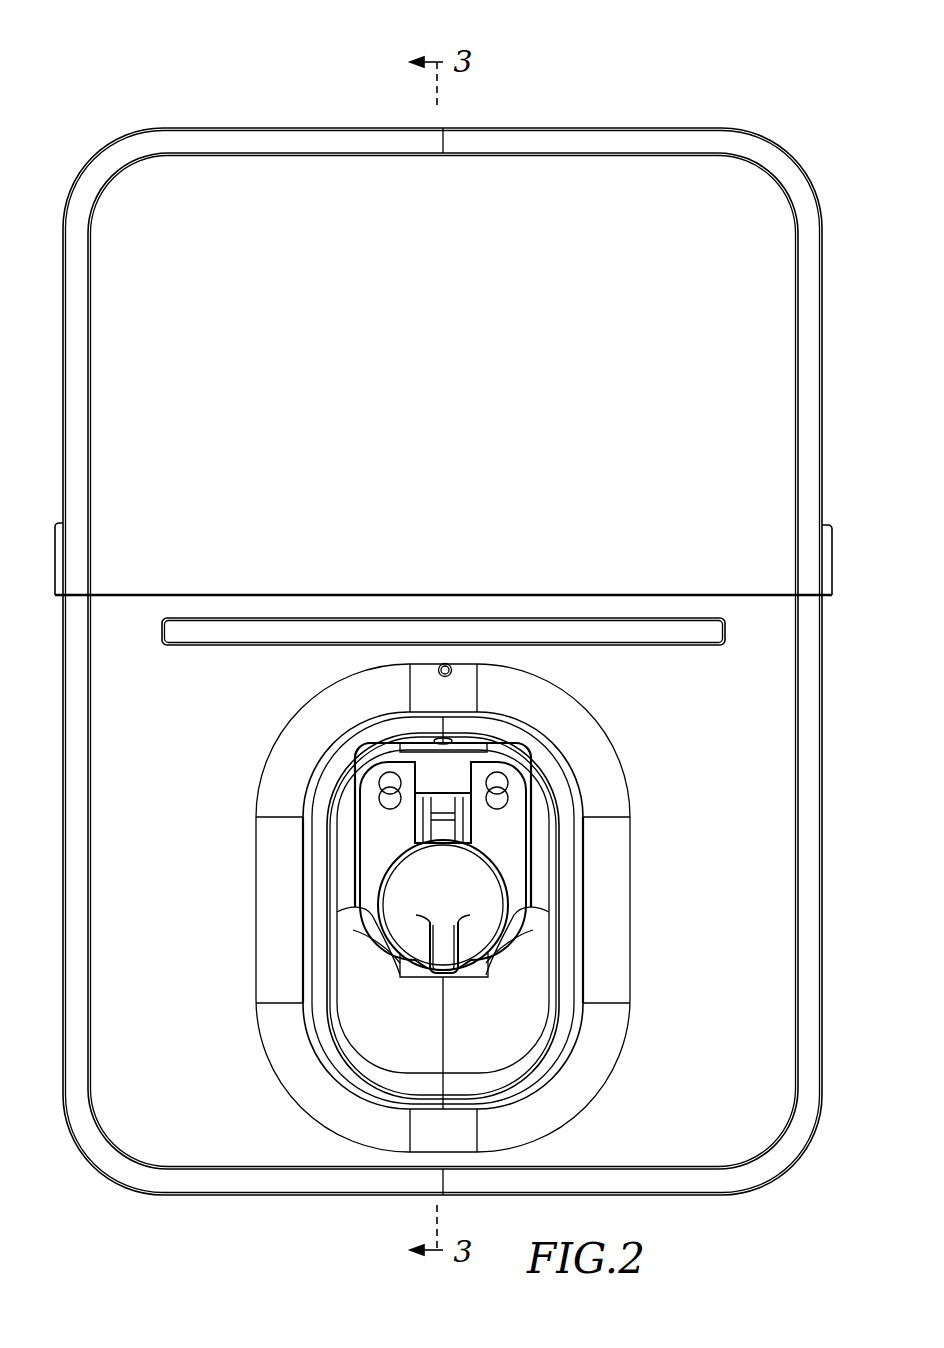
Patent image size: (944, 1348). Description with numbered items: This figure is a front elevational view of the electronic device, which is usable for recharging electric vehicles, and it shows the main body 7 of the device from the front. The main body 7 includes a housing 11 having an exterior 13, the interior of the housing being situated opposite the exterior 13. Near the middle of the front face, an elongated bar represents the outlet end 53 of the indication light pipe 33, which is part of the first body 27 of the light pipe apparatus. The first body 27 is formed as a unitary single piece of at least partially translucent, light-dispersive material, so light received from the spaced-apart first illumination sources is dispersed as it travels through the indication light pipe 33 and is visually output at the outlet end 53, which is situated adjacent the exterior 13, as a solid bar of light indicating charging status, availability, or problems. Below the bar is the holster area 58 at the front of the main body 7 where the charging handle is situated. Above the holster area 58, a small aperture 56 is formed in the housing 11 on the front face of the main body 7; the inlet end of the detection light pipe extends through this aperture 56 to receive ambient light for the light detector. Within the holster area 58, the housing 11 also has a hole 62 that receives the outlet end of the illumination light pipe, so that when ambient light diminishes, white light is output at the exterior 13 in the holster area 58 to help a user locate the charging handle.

The main body 7 is at (463, 607).
The housing 11 is at (645, 128).
The exterior 13 is at (846, 875).
The first body 27 is at (207, 618).
The indication light pipe 33 is at (261, 606).
The outlet end 53 is at (443, 571).
The aperture 56 is at (439, 672).
The holster area 58 is at (550, 985).
The hole 62 is at (454, 741).